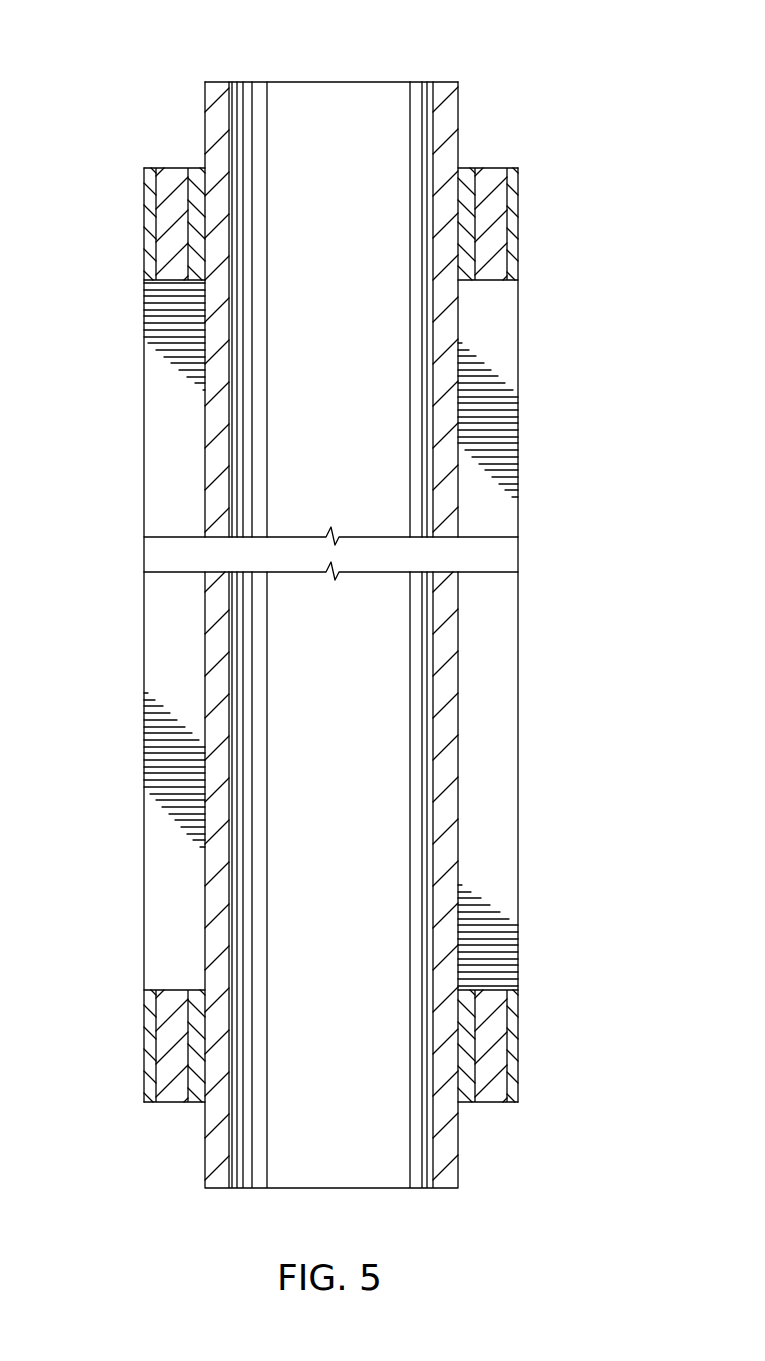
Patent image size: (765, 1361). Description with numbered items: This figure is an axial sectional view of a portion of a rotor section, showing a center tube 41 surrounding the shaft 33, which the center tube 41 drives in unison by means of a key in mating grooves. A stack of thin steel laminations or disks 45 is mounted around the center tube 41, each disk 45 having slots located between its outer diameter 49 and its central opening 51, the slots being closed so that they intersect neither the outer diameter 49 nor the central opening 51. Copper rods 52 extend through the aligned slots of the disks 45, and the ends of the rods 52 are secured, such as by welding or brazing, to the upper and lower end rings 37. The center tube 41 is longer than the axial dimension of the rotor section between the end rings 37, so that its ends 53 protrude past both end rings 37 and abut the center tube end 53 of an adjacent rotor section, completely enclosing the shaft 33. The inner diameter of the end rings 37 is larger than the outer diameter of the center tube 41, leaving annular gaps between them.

The shaft 33 is at (133, 423).
The end ring 37 is at (145, 205).
The center tube 41 is at (447, 136).
The disk 45 is at (144, 315).
The outer diameter 49 is at (144, 464).
The central opening 51 is at (205, 618).
The copper rod 52 is at (490, 1030).
The center tube end 53 is at (451, 82).